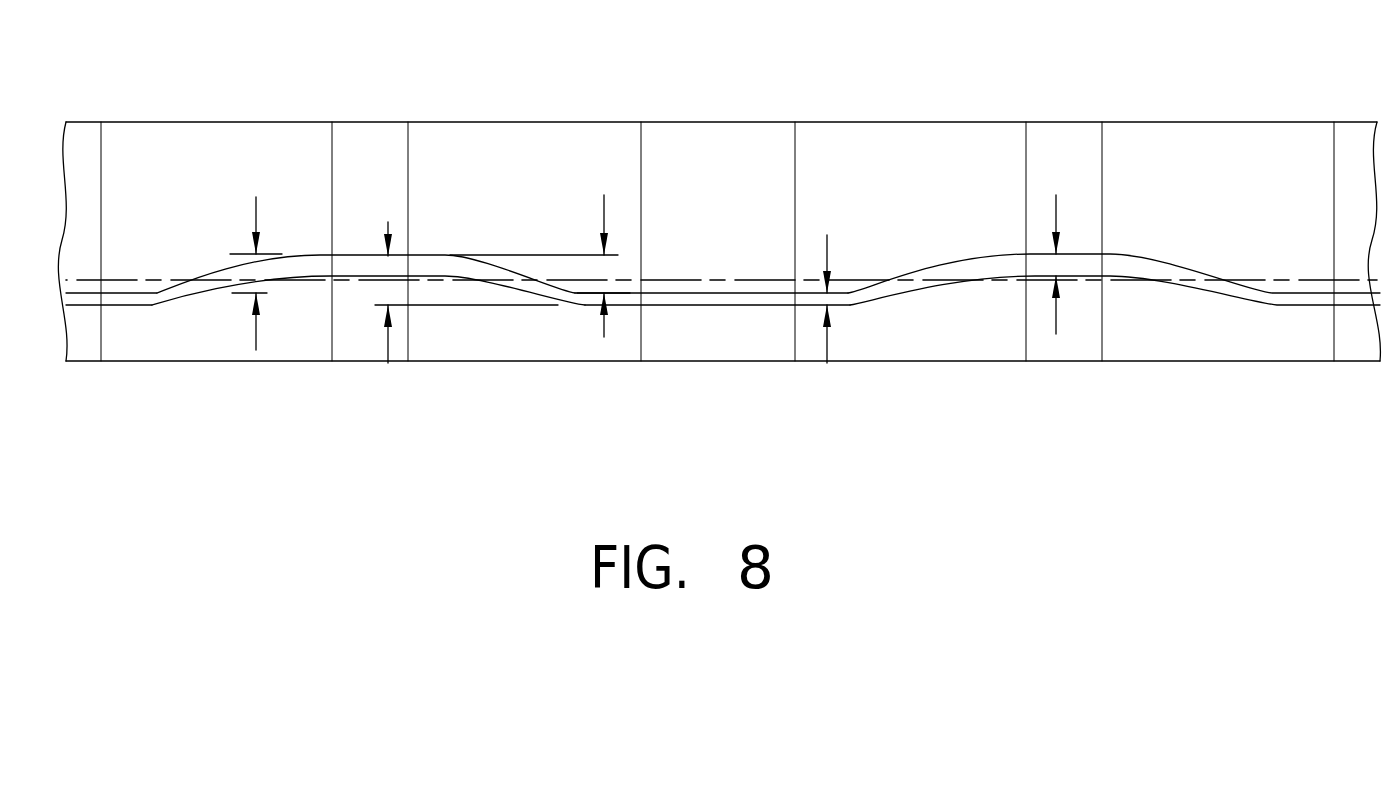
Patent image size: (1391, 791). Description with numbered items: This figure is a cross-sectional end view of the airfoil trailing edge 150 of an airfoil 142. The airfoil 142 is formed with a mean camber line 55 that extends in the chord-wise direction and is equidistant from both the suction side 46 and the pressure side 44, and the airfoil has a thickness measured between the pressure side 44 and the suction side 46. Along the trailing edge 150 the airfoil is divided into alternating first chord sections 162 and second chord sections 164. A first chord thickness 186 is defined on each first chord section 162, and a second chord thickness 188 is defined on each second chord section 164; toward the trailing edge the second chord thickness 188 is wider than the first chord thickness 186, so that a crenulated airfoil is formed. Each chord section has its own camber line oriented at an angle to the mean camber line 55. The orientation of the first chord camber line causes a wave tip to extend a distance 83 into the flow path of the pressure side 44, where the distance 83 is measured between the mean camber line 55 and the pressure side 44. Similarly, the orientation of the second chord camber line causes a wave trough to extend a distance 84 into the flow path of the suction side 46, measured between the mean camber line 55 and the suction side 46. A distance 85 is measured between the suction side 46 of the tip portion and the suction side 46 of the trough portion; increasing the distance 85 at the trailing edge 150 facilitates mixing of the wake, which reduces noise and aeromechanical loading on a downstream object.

The airfoil 142 is at (1193, 67).
The airfoil trailing edge 150 is at (723, 219).
The mean camber line 55 is at (673, 279).
The suction side 46 is at (475, 262).
The pressure side 44 is at (477, 286).
The second chord section 164 is at (433, 203).
The first chord section 162 is at (702, 342).
The distance 85 is at (256, 208).
The distance 83 is at (388, 237).
The distance 84 is at (604, 210).
The first chord thickness 186 is at (827, 348).
The second chord thickness 188 is at (1056, 207).